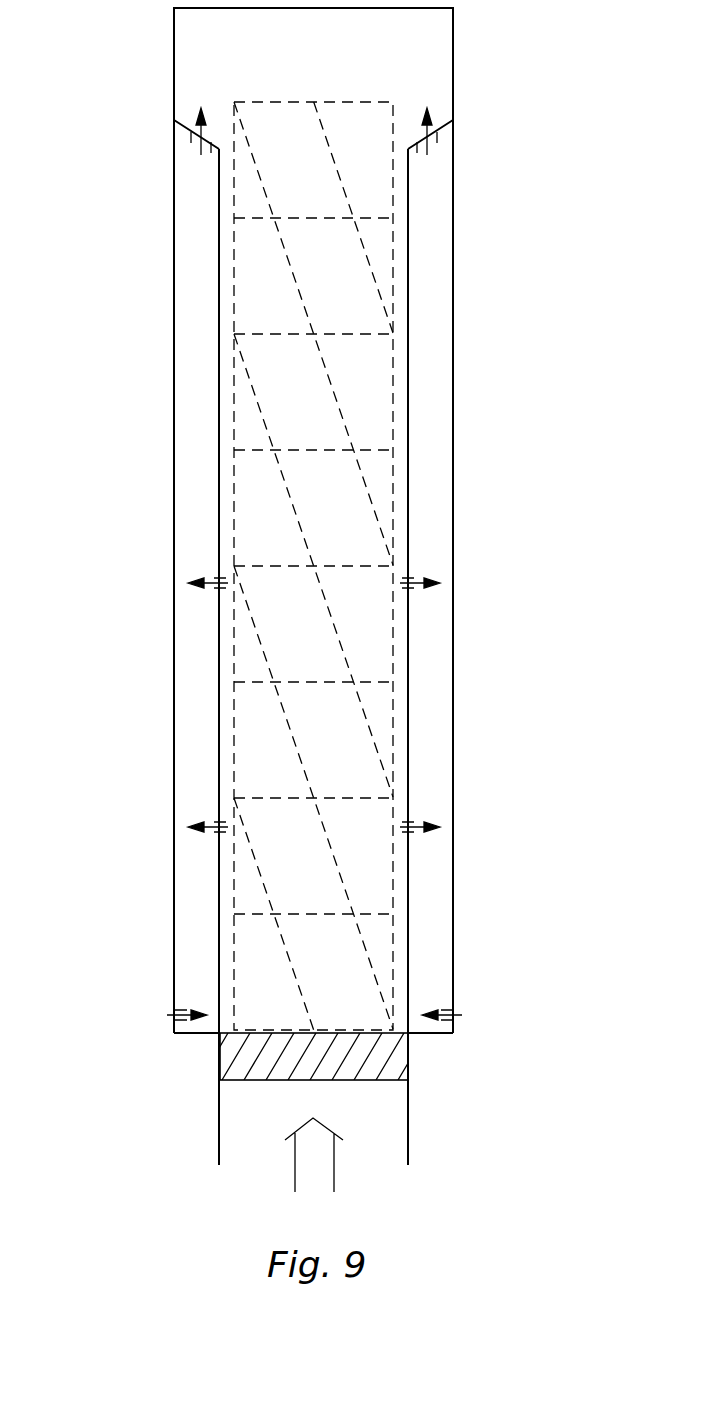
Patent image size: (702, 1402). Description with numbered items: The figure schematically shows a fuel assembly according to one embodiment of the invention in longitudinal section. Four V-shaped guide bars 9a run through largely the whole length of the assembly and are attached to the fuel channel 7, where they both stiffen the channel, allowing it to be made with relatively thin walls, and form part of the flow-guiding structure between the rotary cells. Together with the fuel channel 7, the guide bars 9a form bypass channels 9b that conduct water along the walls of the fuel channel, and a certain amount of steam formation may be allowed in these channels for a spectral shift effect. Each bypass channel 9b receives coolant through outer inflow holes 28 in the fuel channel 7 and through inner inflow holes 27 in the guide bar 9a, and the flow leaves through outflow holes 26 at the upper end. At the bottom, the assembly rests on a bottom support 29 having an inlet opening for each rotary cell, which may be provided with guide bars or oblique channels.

The fuel channel 7 is at (175, 302).
The guide bar 9a is at (219, 512).
The bypass channel 9b is at (195, 408).
The outflow hole 26 is at (190, 147).
The inner inflow hole 27 is at (213, 582).
The outer inflow hole 28 is at (177, 1012).
The bottom support 29 is at (387, 1060).